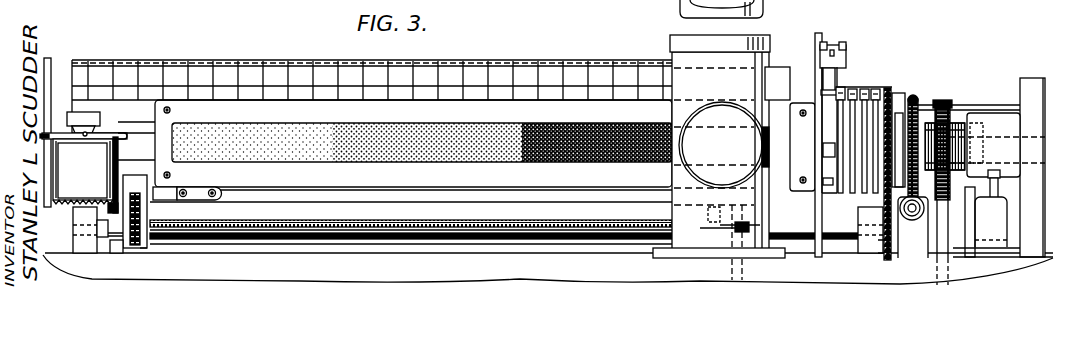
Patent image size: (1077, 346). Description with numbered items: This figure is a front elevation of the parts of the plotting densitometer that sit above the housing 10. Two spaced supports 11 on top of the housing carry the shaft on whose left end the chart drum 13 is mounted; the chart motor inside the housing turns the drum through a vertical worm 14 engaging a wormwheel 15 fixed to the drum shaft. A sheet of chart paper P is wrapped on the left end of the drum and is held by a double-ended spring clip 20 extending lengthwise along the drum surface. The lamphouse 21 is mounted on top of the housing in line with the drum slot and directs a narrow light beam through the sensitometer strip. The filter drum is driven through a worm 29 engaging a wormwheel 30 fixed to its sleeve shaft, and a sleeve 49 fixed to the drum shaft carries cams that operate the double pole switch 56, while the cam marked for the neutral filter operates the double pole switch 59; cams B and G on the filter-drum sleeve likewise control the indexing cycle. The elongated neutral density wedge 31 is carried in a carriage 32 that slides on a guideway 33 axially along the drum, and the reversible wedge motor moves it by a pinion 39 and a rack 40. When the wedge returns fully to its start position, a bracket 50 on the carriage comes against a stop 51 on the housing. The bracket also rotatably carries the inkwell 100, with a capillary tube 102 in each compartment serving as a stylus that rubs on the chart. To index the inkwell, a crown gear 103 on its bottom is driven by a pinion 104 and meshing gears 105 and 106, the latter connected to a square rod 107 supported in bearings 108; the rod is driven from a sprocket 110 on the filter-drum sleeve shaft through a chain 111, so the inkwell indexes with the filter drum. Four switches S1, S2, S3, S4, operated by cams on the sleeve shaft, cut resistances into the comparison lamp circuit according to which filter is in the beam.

The housing 10 is at (548, 268).
The supports 11 is at (797, 63).
The chart drum 13 is at (60, 58).
The vertical worm 14 is at (955, 124).
The wormwheel 15 is at (943, 100).
The double-ended spring clip 20 is at (137, 155).
The lamphouse 21 is at (672, 56).
The worm 29 is at (917, 222).
The wormwheel 30 is at (914, 96).
The neutral density wedge 31 is at (413, 143).
The carriage 32 is at (333, 104).
The guideway 33 is at (322, 211).
The pinion 39 is at (722, 228).
The rack 40 is at (564, 222).
The sleeve 49 is at (997, 118).
The bracket 50 is at (124, 250).
The stop 51 is at (117, 252).
The double pole switch 56 is at (986, 213).
The double pole switch 59 is at (828, 44).
The inkwell 100 is at (83, 171).
The capillary tube 102 is at (125, 131).
The crown gear 103 is at (82, 221).
The pinion 104 is at (108, 207).
The gear 105 is at (148, 210).
The gear 106 is at (138, 251).
The square rod 107 is at (357, 237).
The bearings 108 is at (858, 222).
The sprocket 110 is at (888, 90).
The chain 111 is at (880, 252).
The chart paper P is at (217, 77).
The cam B is at (829, 158).
The cam G is at (828, 186).
The switch S1 is at (876, 89).
The switch S2 is at (864, 89).
The switch S3 is at (851, 89).
The switch S4 is at (840, 87).